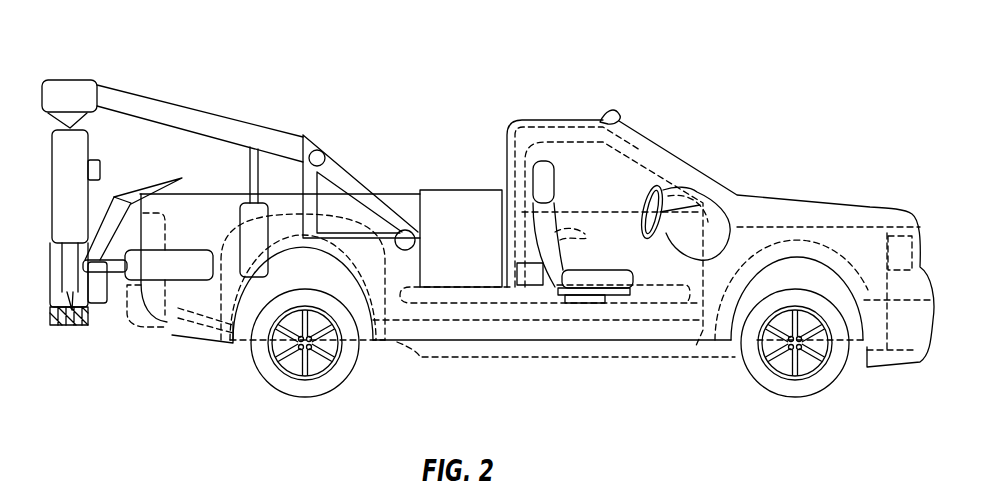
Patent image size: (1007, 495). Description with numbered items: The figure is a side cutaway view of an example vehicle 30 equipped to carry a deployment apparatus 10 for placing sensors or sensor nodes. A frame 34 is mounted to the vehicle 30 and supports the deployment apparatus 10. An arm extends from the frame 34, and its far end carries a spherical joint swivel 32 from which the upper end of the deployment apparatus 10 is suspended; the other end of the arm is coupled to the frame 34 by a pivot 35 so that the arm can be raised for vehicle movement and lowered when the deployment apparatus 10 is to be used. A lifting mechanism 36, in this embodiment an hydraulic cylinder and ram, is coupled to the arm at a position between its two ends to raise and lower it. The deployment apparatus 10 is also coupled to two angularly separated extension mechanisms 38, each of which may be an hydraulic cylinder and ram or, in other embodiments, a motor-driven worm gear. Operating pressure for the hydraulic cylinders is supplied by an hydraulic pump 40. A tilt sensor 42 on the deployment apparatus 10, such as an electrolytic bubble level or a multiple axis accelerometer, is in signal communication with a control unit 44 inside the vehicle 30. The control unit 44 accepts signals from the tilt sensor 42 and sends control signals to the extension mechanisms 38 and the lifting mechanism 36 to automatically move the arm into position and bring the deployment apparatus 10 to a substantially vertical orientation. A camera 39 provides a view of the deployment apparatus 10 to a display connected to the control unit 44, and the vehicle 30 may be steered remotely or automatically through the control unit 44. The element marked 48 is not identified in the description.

The deployment apparatus 10 is at (69, 339).
The vehicle 30 is at (645, 131).
The spherical joint swivel 32 is at (43, 97).
The frame 34 is at (153, 97).
The pivot 35 is at (319, 152).
The lifting mechanism 36 is at (253, 277).
The extension mechanism 38 is at (178, 267).
The camera 39 is at (137, 308).
The hydraulic pump 40 is at (452, 203).
The tilt sensor 42 is at (100, 168).
The control unit 44 is at (532, 287).
The seat mount 48 is at (593, 305).